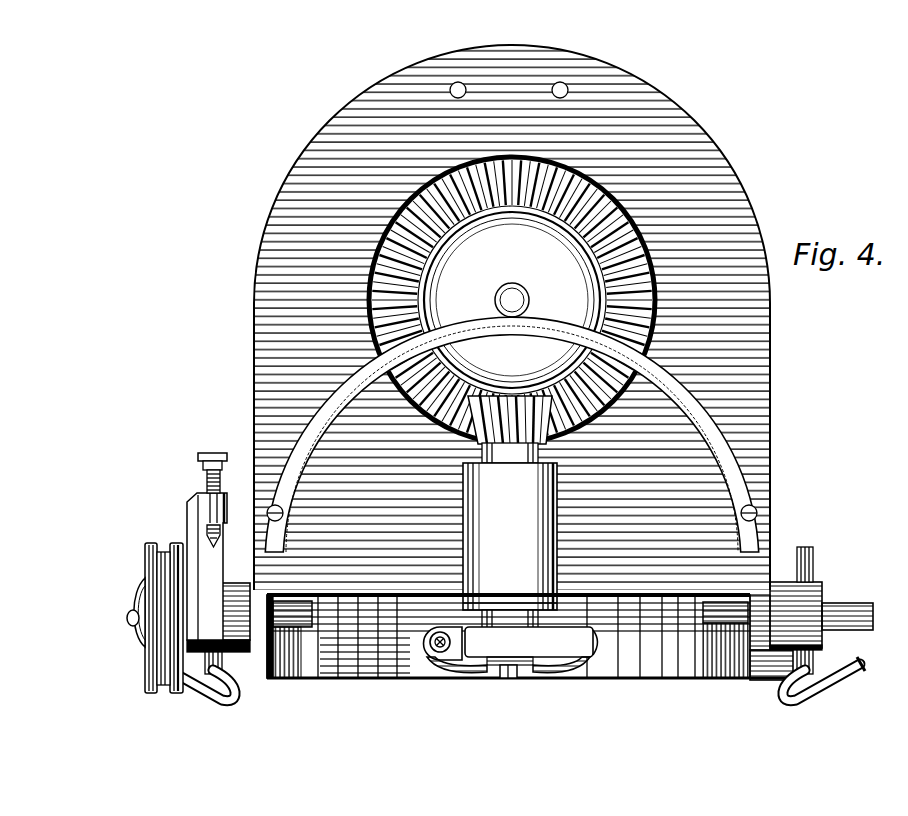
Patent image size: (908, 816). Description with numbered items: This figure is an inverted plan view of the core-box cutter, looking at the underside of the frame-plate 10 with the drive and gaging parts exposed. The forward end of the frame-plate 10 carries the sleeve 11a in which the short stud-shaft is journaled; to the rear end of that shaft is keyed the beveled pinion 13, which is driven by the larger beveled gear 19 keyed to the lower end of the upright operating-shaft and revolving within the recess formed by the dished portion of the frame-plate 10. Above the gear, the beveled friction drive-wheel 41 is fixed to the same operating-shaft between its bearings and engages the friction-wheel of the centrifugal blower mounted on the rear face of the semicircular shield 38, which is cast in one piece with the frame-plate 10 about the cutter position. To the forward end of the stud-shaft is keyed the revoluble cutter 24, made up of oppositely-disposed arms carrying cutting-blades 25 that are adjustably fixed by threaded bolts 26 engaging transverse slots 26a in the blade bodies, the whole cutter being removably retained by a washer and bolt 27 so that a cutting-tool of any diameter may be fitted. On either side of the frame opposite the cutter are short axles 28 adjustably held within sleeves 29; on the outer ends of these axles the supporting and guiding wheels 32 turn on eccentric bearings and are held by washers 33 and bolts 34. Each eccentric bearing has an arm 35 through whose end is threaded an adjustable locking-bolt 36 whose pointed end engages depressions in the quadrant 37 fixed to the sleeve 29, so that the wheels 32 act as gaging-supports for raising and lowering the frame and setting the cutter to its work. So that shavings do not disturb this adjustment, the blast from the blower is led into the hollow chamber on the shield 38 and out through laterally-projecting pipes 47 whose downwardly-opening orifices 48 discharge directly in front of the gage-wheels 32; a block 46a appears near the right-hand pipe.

The frame-plate 10 is at (702, 195).
The beveled gear 19 is at (512, 300).
The beveled pinion 13 is at (516, 402).
The beveled friction drive-wheel 41 is at (545, 308).
The sleeve 11a is at (510, 535).
The semicircular shield 38 is at (668, 642).
The short axles 28 is at (303, 622).
The bracket block 46a is at (758, 683).
The sleeves 29 is at (504, 617).
The quadrants 37 is at (212, 568).
The laterally-projecting pipes 47 is at (200, 690).
The downwardly-opening orifices 48 is at (157, 668).
The arm 35 is at (198, 518).
The adjustable locking-bolt 36 is at (210, 488).
The supporting and guiding wheels 32 is at (175, 570).
The washers 33 is at (137, 598).
The bolts 34 is at (130, 620).
The transverse slots 26a is at (425, 652).
The threaded bolts 26 is at (440, 652).
The revoluble cutter 24 is at (531, 646).
The cutting-blades 25 is at (466, 674).
The bolt 27 is at (508, 680).